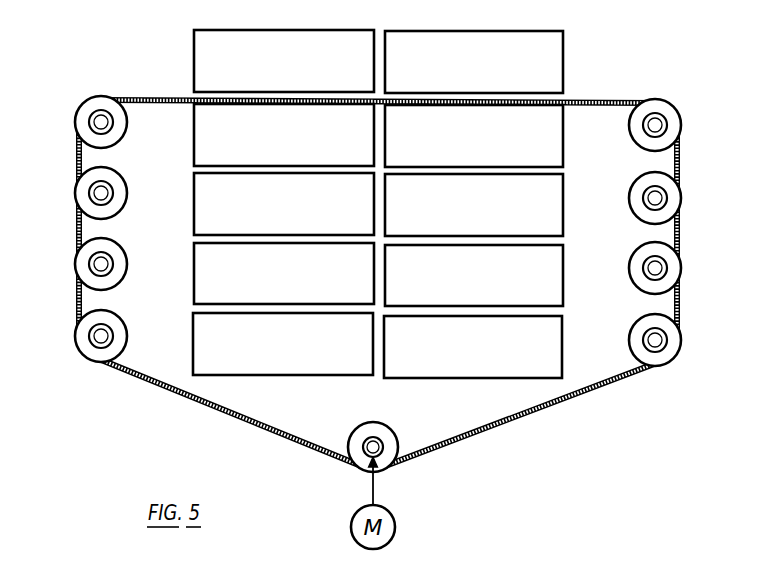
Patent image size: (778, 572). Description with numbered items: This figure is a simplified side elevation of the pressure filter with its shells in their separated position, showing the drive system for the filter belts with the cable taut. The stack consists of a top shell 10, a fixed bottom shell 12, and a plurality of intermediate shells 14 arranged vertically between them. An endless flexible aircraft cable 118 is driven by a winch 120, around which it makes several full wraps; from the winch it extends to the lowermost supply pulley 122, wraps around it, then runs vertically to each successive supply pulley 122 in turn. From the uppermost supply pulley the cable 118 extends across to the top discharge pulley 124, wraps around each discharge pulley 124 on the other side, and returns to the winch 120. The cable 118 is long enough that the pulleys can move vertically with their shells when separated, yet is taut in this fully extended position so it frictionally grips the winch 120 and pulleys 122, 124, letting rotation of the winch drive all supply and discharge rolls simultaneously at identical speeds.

The top shell 10 is at (282, 70).
The bottom shell 12 is at (277, 353).
The intermediate shells 14 is at (280, 139).
The endless flexible aircraft cable 118 is at (78, 228).
The winch 120 is at (390, 438).
The supply pulley 122 is at (83, 191).
The discharge pulley 124 is at (670, 196).